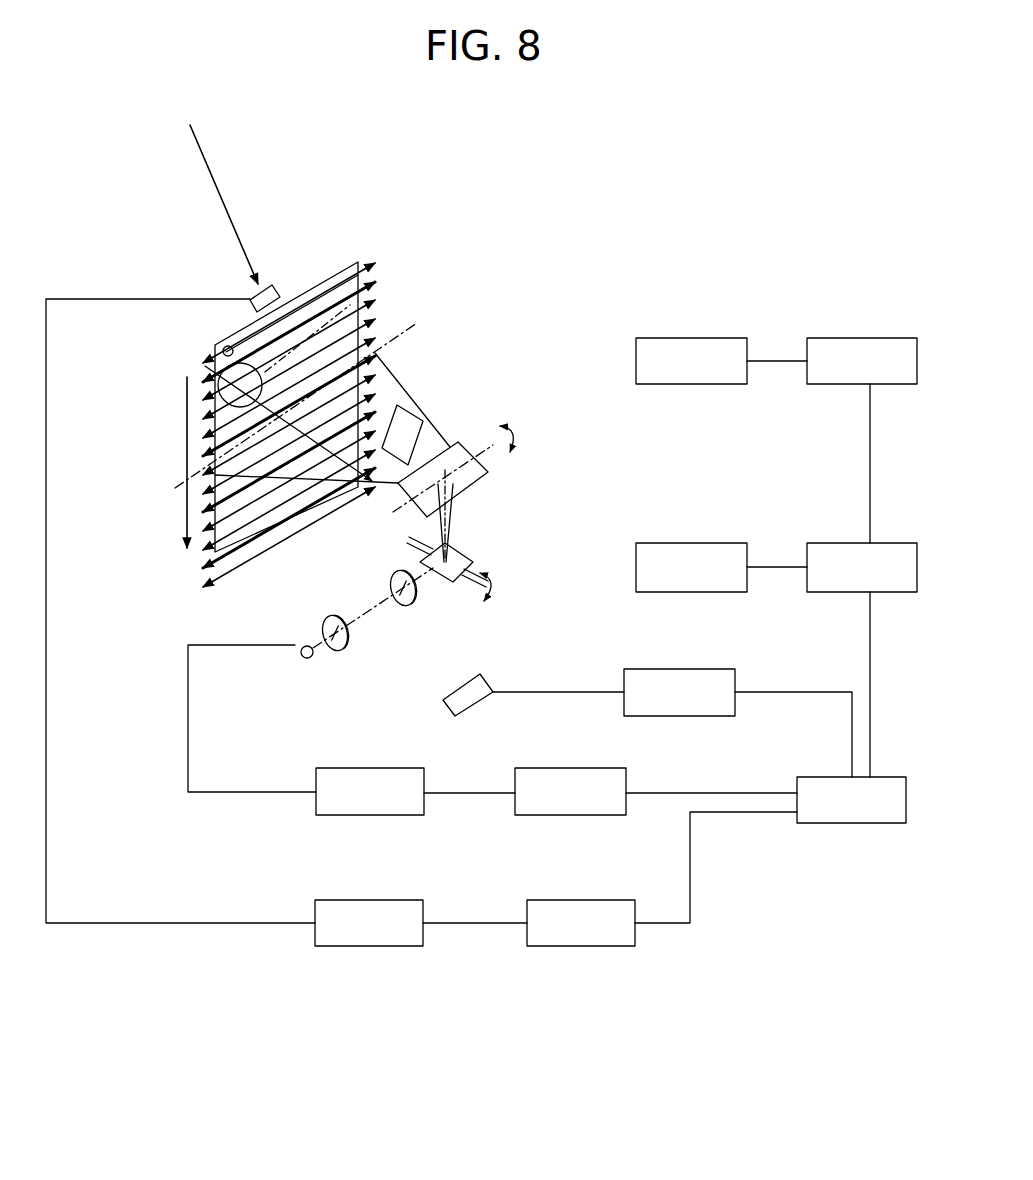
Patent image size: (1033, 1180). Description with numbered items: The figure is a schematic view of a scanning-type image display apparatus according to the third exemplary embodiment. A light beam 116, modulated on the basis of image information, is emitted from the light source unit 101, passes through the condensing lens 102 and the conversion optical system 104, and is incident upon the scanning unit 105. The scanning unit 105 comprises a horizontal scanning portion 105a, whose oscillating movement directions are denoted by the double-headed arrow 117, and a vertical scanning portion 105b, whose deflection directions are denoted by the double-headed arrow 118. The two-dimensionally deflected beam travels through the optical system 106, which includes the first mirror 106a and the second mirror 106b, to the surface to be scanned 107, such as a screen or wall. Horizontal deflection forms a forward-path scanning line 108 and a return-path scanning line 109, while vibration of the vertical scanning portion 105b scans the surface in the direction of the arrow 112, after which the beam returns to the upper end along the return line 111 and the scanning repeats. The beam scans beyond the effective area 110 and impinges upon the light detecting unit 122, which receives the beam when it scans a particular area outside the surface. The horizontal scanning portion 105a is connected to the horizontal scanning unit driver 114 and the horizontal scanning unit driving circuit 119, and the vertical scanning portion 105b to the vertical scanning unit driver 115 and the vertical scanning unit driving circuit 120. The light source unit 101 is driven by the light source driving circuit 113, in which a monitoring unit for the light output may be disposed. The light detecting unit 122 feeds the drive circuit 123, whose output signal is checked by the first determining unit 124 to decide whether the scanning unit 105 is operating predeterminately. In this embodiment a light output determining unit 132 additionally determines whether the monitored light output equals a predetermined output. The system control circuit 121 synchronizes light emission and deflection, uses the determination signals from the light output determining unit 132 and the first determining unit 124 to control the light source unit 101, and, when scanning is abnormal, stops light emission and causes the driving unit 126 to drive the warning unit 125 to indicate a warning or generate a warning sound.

The light source unit 101 is at (298, 655).
The condensing lens 102 is at (340, 652).
The conversion optical system 104 is at (410, 605).
The scanning unit 105 is at (519, 477).
The horizontal scanning portion 105a is at (456, 560).
The vertical scanning portion 105b is at (458, 442).
The optical system 106 is at (452, 345).
The first mirror 106a is at (448, 447).
The second mirror 106b is at (398, 420).
The surface to be scanned 107 is at (303, 288).
The forward-path scanning line 108 is at (287, 300).
The return-path scanning line 109 is at (320, 282).
The effective area 110 is at (250, 325).
The return line 111 is at (236, 363).
The arrow 112 is at (187, 457).
The light source driving circuit 113 is at (400, 815).
The horizontal scanning unit driver 114 is at (680, 543).
The vertical scanning unit driver 115 is at (680, 338).
The light beam 116 is at (355, 597).
The double-headed arrow 117 is at (500, 593).
The double-headed arrow 118 is at (512, 430).
The horizontal scanning unit driving circuit 119 is at (820, 543).
The vertical scanning unit driving circuit 120 is at (820, 338).
The system control circuit 121 is at (830, 823).
The light detecting unit 122 is at (222, 206).
The drive circuit 123 is at (400, 946).
The first determining unit 124 is at (588, 946).
The warning unit 125 is at (468, 712).
The driving unit 126 is at (655, 716).
The light output determining unit 132 is at (603, 815).